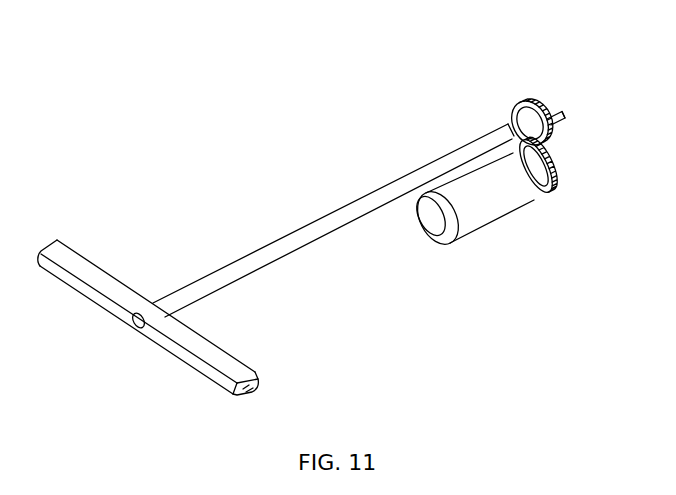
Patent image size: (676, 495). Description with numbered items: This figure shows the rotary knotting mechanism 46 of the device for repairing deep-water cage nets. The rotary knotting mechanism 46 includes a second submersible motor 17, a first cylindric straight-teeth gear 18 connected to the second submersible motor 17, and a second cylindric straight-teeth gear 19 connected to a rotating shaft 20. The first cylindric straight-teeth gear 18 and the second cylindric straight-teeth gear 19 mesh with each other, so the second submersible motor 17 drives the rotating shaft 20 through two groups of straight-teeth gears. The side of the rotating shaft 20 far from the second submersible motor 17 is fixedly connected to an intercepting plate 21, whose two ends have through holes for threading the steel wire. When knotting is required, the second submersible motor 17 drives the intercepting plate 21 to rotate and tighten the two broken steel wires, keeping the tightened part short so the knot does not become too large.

The rotary knotting mechanism 46 is at (422, 92).
The rotating shaft 20 is at (303, 230).
The second submersible motor 17 is at (468, 196).
The first cylindric straight-teeth gear 18 is at (530, 122).
The second cylindric straight-teeth gear 19 is at (544, 172).
The intercepting plate 21 is at (182, 360).